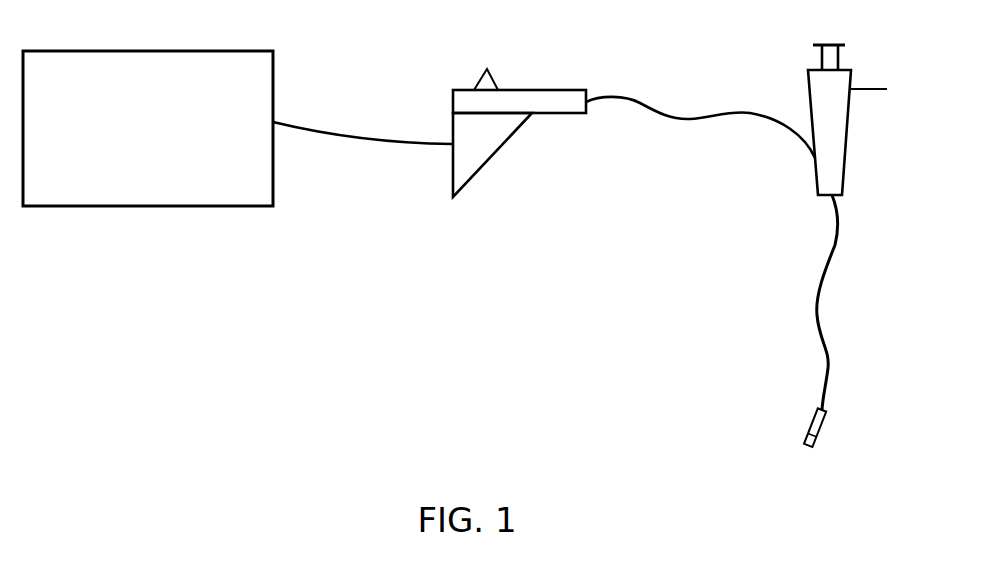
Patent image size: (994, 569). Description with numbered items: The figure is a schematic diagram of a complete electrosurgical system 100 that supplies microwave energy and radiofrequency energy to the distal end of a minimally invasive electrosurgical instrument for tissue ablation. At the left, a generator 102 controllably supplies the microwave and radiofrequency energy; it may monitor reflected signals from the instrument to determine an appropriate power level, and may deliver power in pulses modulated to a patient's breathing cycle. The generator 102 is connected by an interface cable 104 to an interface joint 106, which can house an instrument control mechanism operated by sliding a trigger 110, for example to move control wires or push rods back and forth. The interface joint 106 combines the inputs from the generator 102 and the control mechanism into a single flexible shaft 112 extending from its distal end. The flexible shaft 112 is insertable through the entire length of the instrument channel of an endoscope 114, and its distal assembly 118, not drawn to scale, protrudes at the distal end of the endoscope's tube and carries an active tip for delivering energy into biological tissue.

The electrosurgical system 100 is at (295, 327).
The generator 102 is at (174, 140).
The interface cable 104 is at (377, 144).
The interface joint 106 is at (495, 153).
The trigger 110 is at (479, 84).
The flexible shaft 112 is at (703, 117).
The endoscope 114 is at (847, 136).
The distal assembly 118 is at (822, 428).